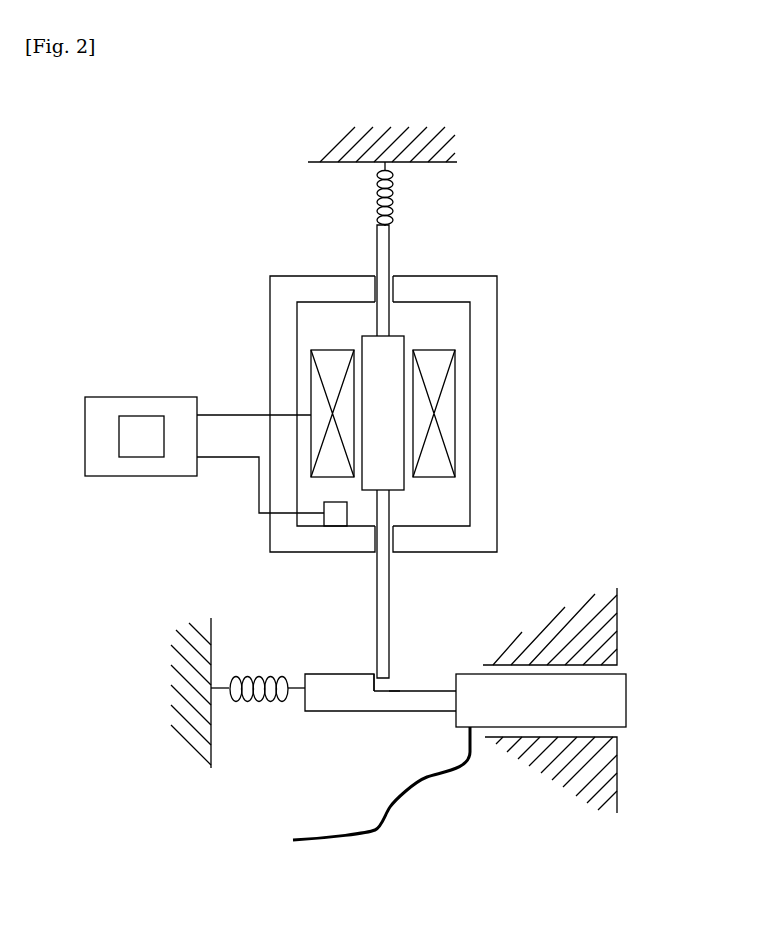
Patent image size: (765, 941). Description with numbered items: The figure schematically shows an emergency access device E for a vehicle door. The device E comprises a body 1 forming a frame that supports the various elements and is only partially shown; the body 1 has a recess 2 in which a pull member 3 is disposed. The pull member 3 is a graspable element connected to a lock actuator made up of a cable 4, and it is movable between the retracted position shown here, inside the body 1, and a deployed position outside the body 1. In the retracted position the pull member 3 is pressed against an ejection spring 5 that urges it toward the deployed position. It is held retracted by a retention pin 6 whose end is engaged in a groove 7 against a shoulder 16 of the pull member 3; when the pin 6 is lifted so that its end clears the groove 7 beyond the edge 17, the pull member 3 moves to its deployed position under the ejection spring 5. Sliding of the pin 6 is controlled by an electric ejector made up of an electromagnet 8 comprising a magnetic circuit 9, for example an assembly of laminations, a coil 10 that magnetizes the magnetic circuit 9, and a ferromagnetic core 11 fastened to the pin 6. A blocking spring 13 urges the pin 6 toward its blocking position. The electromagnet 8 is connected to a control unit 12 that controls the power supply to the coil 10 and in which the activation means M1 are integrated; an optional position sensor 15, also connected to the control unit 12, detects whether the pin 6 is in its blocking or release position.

The body 1 is at (588, 630).
The recess 2 is at (485, 668).
The pull member 3 is at (430, 712).
The cable 4 is at (417, 787).
The ejection spring 5 is at (262, 677).
The retention pin 6 is at (378, 625).
The groove 7 is at (397, 691).
The electromagnet 8 is at (518, 293).
The magnetic circuit 9 is at (496, 345).
The coil 10 is at (455, 424).
The ferromagnetic core 11 is at (375, 358).
The control unit 12 is at (118, 402).
The activation means M1 is at (142, 424).
The blocking spring 13 is at (378, 192).
The position sensor 15 is at (330, 520).
The shoulder 16 is at (373, 681).
The edge 17 is at (374, 675).
The emergency access device E is at (606, 272).